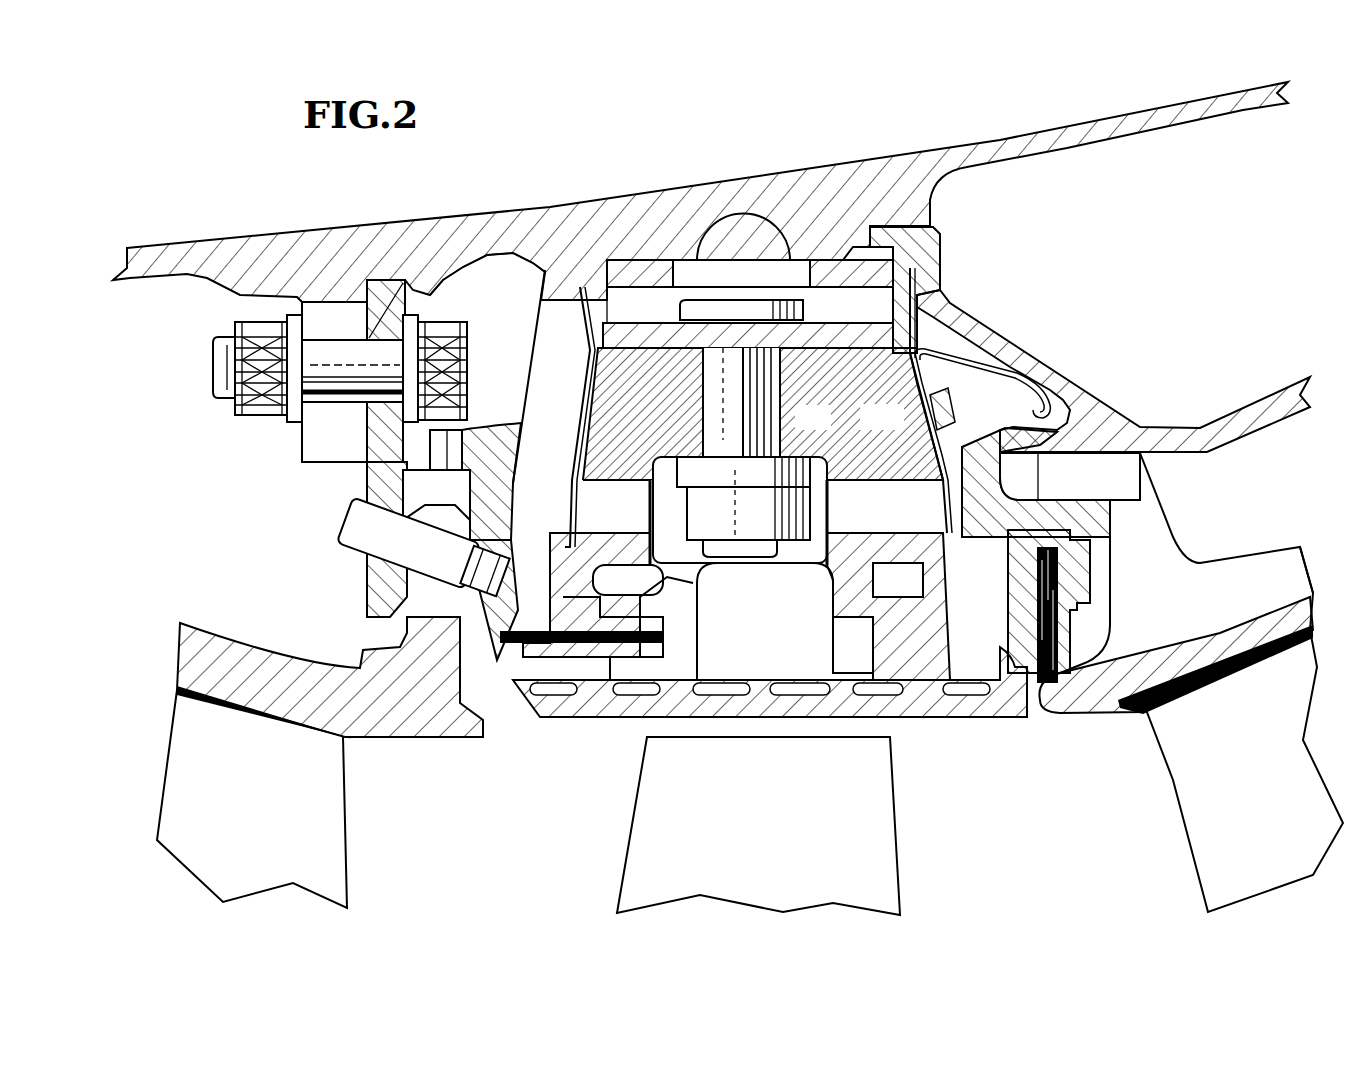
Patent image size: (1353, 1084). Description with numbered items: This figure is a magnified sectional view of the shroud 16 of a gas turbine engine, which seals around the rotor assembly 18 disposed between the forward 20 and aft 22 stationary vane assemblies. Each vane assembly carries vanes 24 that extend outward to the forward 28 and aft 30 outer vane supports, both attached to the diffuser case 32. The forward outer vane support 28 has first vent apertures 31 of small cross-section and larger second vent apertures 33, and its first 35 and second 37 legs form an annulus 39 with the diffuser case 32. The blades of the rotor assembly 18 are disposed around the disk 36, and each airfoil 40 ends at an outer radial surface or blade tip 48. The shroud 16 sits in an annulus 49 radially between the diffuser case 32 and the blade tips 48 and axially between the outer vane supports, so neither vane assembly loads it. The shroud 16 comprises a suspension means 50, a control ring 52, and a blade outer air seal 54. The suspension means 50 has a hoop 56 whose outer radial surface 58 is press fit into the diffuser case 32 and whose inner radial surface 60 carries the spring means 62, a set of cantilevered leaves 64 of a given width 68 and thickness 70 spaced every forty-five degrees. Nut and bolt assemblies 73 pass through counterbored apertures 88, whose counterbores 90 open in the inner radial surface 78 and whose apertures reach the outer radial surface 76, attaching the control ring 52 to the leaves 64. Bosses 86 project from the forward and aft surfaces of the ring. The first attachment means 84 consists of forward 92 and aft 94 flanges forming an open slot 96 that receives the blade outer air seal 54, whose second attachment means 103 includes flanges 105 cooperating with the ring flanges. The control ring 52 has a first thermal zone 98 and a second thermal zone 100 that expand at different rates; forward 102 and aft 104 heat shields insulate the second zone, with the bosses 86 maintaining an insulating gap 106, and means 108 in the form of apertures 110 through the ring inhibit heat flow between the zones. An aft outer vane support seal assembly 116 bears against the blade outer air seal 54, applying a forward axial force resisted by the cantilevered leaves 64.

The shroud 16 is at (832, 240).
The rotor assembly 18 is at (605, 853).
The forward stationary vane assembly 20 is at (350, 785).
The aft stationary vane assembly 22 is at (1143, 743).
The vanes 24 is at (231, 818).
The forward outer vane support 28 is at (355, 592).
The aft outer vane support 30 is at (1217, 643).
The first vent apertures 31 is at (433, 453).
The diffuser case 32 is at (342, 258).
The second vent apertures 33 is at (553, 376).
The first leg 35 is at (387, 307).
The disk 36 is at (933, 547).
The second leg 37 is at (533, 291).
The annulus 39 is at (440, 292).
The airfoil 40 is at (744, 861).
The blade tip 48 is at (643, 727).
The annulus 49 is at (547, 410).
The suspension means 50 is at (761, 250).
The control ring 52 is at (736, 621).
The blade outer air seal 54 is at (927, 713).
The hoop 56 is at (617, 273).
The outer radial surface 58 is at (643, 257).
The inner radial surface 60 is at (600, 283).
The spring means 62 is at (676, 296).
The cantilevered leaves 64 is at (820, 328).
The width 68 is at (605, 290).
The thickness 70 is at (880, 292).
The nut and bolt assemblies 73 is at (716, 413).
The outer radial surface 76 is at (672, 320).
The inner radial surface 78 is at (818, 560).
The first attachment means 84 is at (565, 618).
The bosses 86 is at (577, 285).
The counterbored apertures 88 is at (703, 377).
The counterbores 90 is at (798, 458).
The forward flange 92 is at (650, 627).
The aft flange 94 is at (830, 617).
The open slot 96 is at (608, 585).
The first thermal zone 98 is at (915, 575).
The second thermal zone 100 is at (932, 441).
The forward heat shield 102 is at (547, 447).
The second attachment means 103 is at (917, 569).
The aft heat shield 104 is at (932, 388).
The flanges 105 is at (893, 592).
The gap 106 is at (648, 488).
The means for inhibiting the flow of thermal energy 108 is at (953, 499).
The apertures 110 is at (780, 490).
The aft outer vane support seal assembly 116 is at (1007, 687).